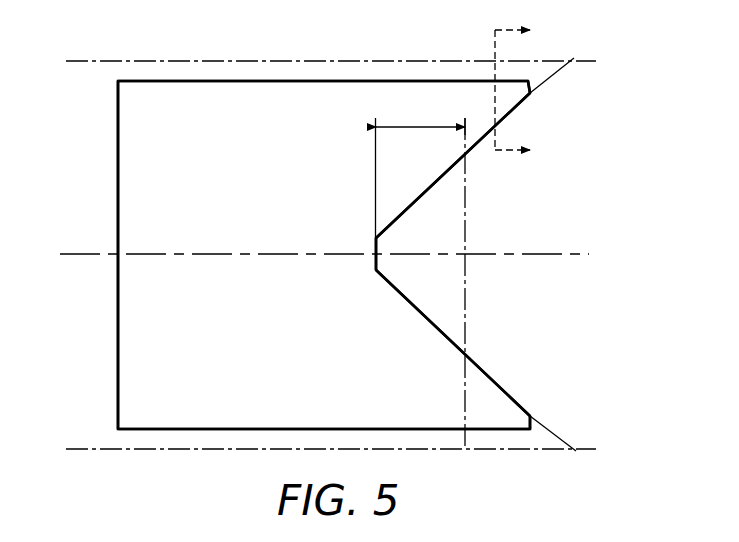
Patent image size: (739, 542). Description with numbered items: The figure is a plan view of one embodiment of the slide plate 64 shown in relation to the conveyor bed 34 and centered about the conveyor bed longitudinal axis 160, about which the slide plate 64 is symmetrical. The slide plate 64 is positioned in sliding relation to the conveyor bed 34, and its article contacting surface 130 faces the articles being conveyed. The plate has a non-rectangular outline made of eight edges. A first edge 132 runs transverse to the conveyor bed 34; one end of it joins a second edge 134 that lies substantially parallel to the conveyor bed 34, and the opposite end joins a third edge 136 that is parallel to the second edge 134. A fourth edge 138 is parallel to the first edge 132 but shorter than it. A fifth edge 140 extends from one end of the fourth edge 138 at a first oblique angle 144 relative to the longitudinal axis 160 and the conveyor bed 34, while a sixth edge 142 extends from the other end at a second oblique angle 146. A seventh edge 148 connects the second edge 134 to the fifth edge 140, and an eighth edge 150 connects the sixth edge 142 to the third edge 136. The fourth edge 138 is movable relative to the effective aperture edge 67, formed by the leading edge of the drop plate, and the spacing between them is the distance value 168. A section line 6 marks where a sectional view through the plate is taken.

The section line 6- 6 is at (524, 91).
The conveyor bed 34 is at (587, 60).
The slide plate 64 is at (340, 46).
The effective aperture edge 67 is at (468, 182).
The article contacting surface 130 is at (215, 98).
The first edge 132 is at (117, 180).
The second edge 134 is at (360, 80).
The third edge 136 is at (140, 430).
The fourth edge 138 is at (378, 258).
The fifth edge 140 is at (396, 220).
The sixth edge 142 is at (483, 365).
The first oblique angle 144 is at (560, 68).
The second oblique angle 146 is at (558, 438).
The seventh edge 148 is at (532, 94).
The eighth edge 150 is at (534, 414).
The longitudinal axis 160 is at (92, 254).
The distance value 168 is at (422, 125).